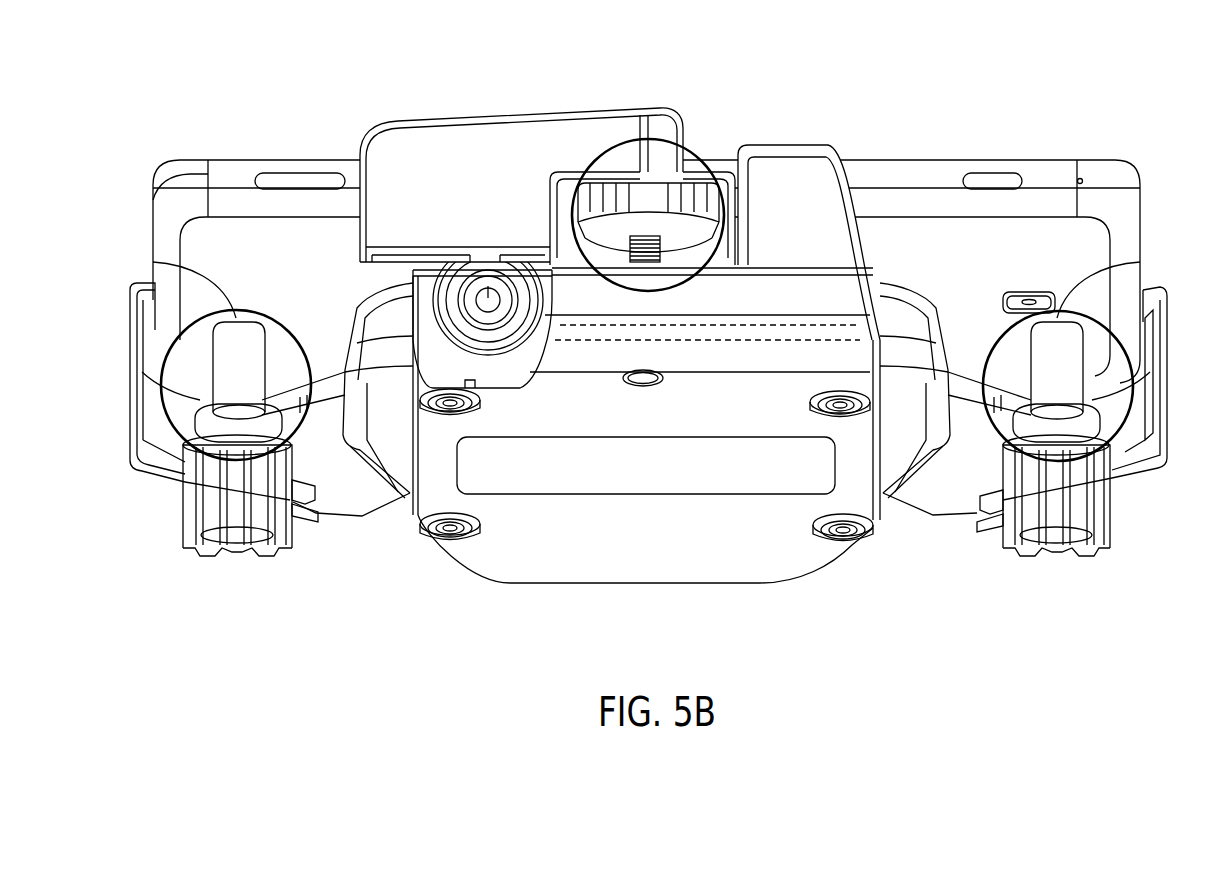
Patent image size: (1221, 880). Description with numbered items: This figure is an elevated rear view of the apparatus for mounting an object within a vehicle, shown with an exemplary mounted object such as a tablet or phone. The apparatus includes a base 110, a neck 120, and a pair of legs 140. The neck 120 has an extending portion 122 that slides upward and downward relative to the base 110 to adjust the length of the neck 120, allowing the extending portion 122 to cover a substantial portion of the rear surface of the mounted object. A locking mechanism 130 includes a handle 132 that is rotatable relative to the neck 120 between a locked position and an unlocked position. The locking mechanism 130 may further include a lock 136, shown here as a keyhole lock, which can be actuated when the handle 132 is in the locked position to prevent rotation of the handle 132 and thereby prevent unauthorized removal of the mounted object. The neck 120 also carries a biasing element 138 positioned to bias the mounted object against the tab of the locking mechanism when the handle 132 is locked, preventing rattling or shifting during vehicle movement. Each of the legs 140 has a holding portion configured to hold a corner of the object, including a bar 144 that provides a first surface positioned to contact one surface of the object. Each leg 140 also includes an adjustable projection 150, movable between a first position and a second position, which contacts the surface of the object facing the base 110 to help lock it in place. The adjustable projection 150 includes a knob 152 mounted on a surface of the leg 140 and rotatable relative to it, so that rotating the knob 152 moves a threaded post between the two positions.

The base 110 is at (905, 297).
The neck 120 is at (793, 138).
The extending portion 122 is at (657, 585).
The locking mechanism 130 is at (523, 112).
The handle 132 is at (397, 128).
The lock 136 is at (503, 268).
The biasing element 138 is at (683, 187).
The legs 140 is at (345, 515).
The bar 144 is at (129, 385).
The adjustable projection 150 is at (152, 262).
The knob 152 is at (235, 543).